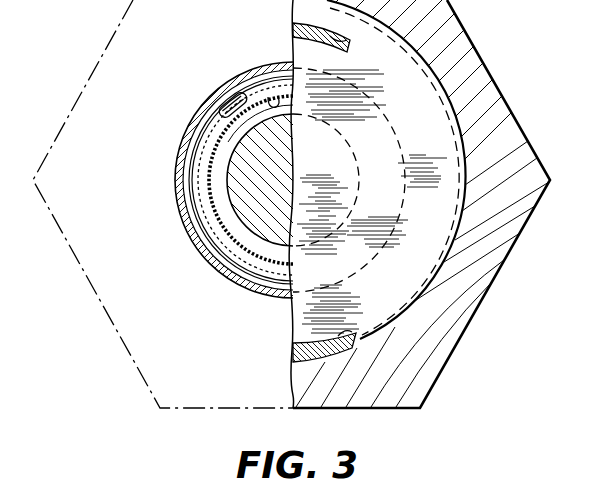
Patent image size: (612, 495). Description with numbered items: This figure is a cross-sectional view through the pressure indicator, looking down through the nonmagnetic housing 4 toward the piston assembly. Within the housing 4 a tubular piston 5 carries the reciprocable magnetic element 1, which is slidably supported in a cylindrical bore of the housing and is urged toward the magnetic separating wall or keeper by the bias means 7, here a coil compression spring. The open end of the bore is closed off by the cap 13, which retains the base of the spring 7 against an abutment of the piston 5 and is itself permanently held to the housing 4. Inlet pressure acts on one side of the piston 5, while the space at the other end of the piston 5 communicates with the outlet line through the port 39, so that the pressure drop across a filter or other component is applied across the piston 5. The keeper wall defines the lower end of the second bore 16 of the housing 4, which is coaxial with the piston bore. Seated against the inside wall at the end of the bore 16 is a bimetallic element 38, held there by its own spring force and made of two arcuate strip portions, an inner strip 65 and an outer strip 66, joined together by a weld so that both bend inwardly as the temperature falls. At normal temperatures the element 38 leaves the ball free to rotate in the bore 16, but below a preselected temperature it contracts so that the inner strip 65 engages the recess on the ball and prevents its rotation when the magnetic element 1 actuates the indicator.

The reciprocable magnetic element 1 is at (327, 166).
The housing 4 is at (482, 70).
The tubular piston 5 is at (242, 192).
The bias means 7 is at (203, 140).
The cap 13 is at (222, 273).
The second bore 16 is at (438, 292).
The bimetallic element 38 is at (352, 46).
The port 39 is at (269, 100).
The inner strip portion 65 is at (345, 336).
The outer strip portion 66 is at (339, 35).